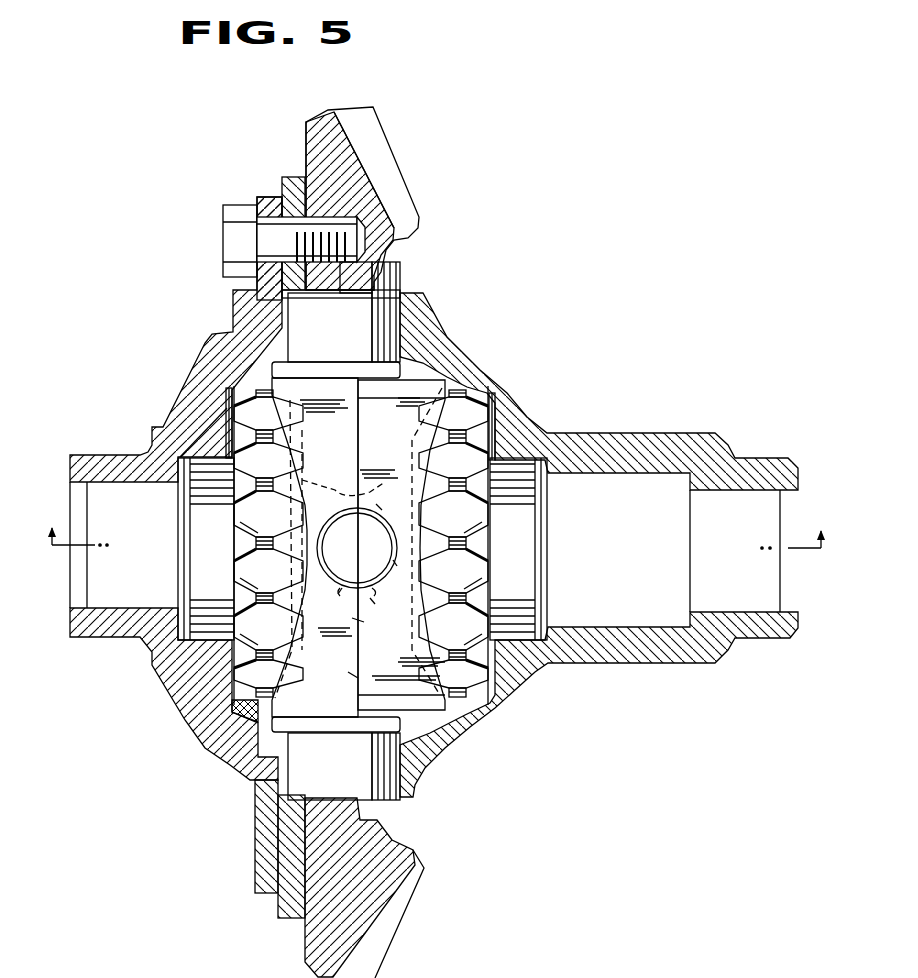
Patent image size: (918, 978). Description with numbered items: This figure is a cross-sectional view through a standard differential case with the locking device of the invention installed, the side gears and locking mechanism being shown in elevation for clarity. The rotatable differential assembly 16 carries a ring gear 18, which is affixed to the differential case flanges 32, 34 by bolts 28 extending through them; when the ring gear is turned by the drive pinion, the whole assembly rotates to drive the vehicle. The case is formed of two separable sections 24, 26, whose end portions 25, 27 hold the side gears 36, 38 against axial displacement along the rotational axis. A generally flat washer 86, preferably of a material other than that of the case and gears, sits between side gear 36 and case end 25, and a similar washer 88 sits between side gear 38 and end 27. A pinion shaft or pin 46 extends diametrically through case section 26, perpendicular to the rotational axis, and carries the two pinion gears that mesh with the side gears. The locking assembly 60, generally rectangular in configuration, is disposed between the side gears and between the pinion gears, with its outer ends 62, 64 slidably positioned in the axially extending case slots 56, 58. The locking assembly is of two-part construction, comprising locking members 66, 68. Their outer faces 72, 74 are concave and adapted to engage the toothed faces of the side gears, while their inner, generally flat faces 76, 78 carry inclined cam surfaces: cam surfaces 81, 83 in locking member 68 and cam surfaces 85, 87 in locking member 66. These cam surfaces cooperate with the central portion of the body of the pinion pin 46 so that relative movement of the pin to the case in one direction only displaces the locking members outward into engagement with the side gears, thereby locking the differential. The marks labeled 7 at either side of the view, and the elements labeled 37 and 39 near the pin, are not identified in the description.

The section line 7- 7 is at (435, 522).
The differential assembly 16 is at (434, 545).
The ring gear 18 is at (388, 159).
The differential case section 24 is at (205, 350).
The end portion of case 25 is at (200, 420).
The differential case section 26 is at (490, 362).
The end portion of case 27 is at (548, 425).
The bolts 28 is at (222, 237).
The differential case flange 32 is at (270, 196).
The differential case flange 34 is at (303, 176).
The side gear 36 is at (195, 549).
The pinion shaft surface 37 is at (307, 530).
The side gear 38 is at (505, 553).
The shaft surface 39 is at (395, 565).
The differential pinion shaft or pin 46 is at (348, 559).
The axially extending slot 56 is at (402, 296).
The axially extending slot 58 is at (395, 797).
The locking assembly 60 is at (358, 547).
The outer end of locking assembly 62 is at (328, 334).
The outer end of locking assembly 64 is at (328, 769).
The locking member 66 is at (312, 671).
The locking member 68 is at (383, 673).
The outer face 72 is at (293, 420).
The outer face 74 is at (430, 420).
The inner face 76 is at (358, 622).
The inner face 78 is at (355, 676).
The inclined cam surface 81 is at (378, 505).
The inclined cam surface 83 is at (372, 598).
The inclined cam surface 85 is at (342, 462).
The flat washer 86 is at (229, 405).
The inclined cam surface 87 is at (342, 590).
The washer 88 is at (515, 420).